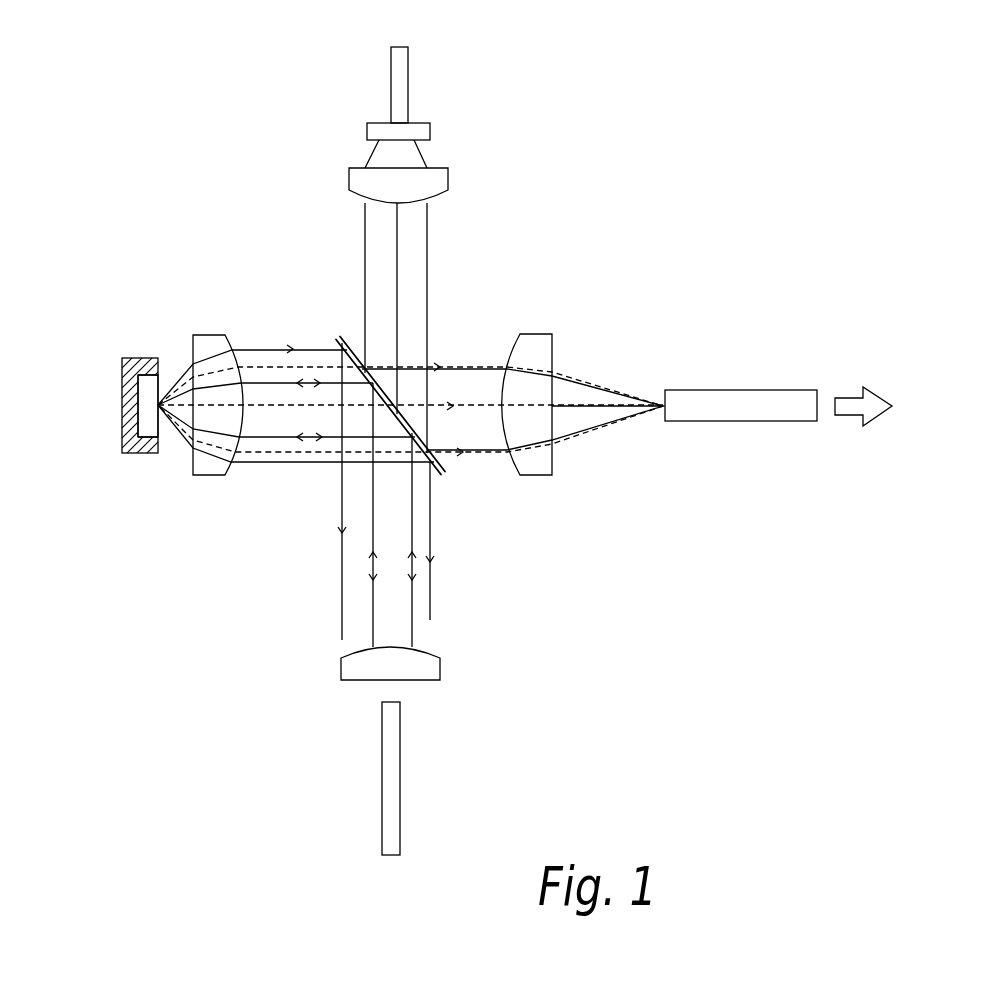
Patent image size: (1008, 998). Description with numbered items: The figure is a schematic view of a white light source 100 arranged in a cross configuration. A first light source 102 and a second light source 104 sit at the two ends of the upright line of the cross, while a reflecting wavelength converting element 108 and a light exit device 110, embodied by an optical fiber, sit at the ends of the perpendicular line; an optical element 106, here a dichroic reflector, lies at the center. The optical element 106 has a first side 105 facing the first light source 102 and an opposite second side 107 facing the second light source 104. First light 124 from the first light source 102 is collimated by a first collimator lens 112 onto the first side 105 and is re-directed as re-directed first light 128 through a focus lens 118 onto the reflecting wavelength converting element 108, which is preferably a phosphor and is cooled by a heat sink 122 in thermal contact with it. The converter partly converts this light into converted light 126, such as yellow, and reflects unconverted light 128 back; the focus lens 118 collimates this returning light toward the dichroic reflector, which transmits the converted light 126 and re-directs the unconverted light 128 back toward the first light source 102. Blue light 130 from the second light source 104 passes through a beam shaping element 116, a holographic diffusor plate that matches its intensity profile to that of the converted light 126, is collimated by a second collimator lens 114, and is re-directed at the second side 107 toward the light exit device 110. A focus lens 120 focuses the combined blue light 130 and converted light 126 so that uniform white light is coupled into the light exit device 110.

The white light source 100 is at (759, 99).
The first light source 102 is at (400, 765).
The second light source 104 is at (408, 70).
The first side 105 is at (338, 362).
The optical element 106 is at (443, 475).
The second side 107 is at (350, 344).
The reflecting wavelength converting element 108 is at (156, 358).
The light exit device 110 is at (745, 390).
The first collimator lens 112 is at (441, 670).
The second collimator lens 114 is at (448, 178).
The beam shaping element 116 is at (367, 128).
The focus lens 118 is at (217, 335).
The focus lens 120 is at (548, 334).
The heat sink 122 is at (123, 388).
The first light 124 is at (373, 590).
The converted light 126 is at (274, 362).
The re-directed first light 128 is at (290, 383).
The blue light 130 is at (365, 247).